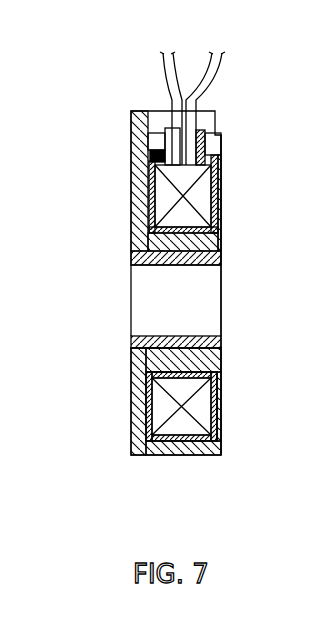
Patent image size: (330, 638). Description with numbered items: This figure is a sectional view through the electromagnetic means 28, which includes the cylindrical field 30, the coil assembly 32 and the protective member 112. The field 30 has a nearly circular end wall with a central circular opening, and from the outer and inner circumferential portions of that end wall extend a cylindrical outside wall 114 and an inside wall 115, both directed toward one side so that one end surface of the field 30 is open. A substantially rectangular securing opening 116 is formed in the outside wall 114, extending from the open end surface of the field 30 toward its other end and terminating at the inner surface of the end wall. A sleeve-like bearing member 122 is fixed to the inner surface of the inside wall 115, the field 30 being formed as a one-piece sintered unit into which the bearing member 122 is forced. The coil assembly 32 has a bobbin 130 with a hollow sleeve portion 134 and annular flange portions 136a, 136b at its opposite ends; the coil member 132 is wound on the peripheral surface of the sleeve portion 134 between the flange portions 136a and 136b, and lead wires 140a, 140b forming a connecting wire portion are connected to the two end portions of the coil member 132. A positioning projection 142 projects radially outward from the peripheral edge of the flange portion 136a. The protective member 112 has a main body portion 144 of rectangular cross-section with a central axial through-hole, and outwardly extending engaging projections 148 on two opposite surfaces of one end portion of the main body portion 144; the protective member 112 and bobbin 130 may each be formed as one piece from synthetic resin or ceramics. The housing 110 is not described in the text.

The electromagnetic means 28 is at (103, 346).
The cylindrical field 30 is at (125, 232).
The coil assembly 32 is at (222, 185).
The lower housing 110 is at (131, 400).
The protective member 112 is at (160, 129).
The cylindrical outside wall 114 is at (182, 450).
The inside wall 115 is at (165, 352).
The securing opening 116 is at (148, 140).
The sleeve-like bearing member 122 is at (190, 340).
The bobbin 130 is at (222, 385).
The coil member 132 is at (213, 414).
The hollow sleeve portion 134 is at (212, 230).
The annular flange portion 136a is at (215, 210).
The annular flange portion 136b is at (149, 195).
The lead wire 140a is at (222, 62).
The lead wire 140b is at (163, 62).
The positioning projection 142 is at (213, 158).
The main body portion 144 is at (170, 127).
The engaging projection 148 is at (150, 158).